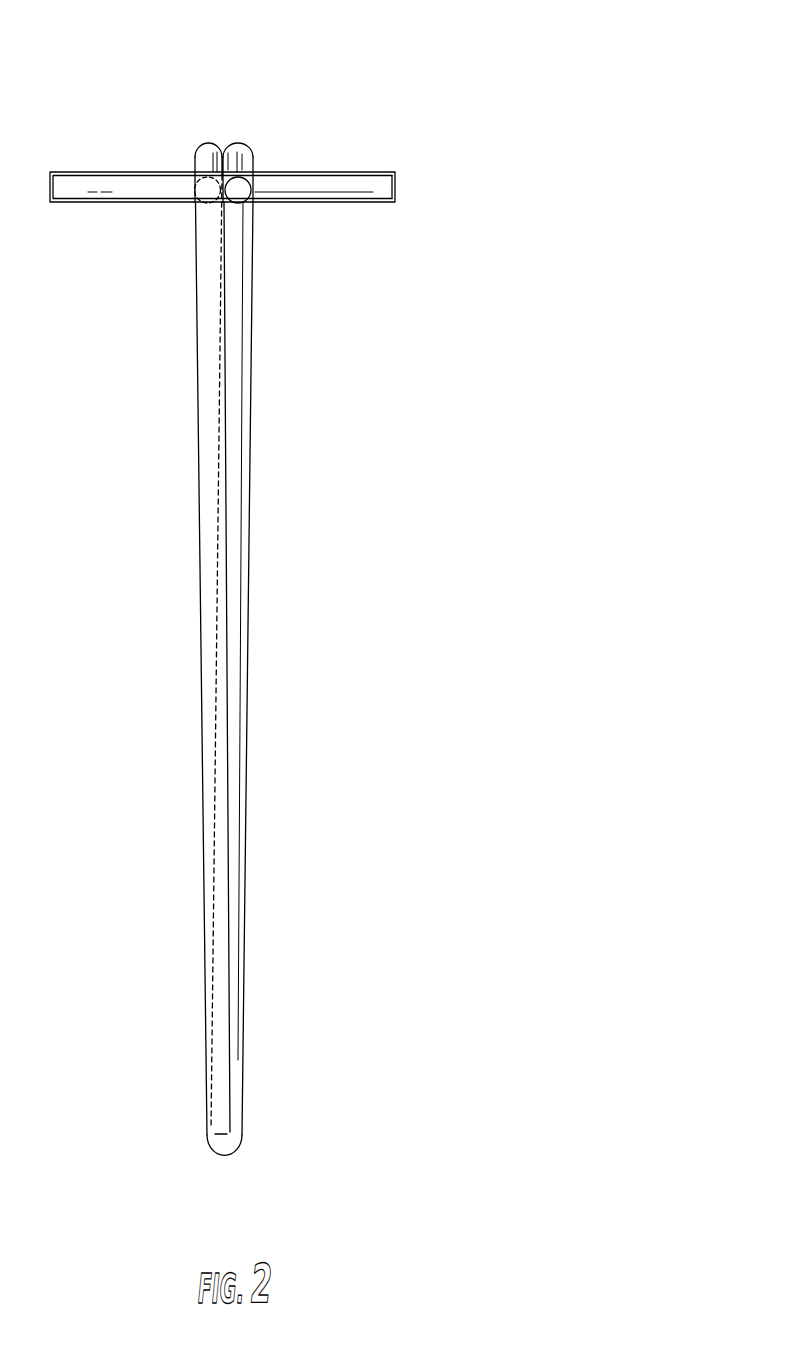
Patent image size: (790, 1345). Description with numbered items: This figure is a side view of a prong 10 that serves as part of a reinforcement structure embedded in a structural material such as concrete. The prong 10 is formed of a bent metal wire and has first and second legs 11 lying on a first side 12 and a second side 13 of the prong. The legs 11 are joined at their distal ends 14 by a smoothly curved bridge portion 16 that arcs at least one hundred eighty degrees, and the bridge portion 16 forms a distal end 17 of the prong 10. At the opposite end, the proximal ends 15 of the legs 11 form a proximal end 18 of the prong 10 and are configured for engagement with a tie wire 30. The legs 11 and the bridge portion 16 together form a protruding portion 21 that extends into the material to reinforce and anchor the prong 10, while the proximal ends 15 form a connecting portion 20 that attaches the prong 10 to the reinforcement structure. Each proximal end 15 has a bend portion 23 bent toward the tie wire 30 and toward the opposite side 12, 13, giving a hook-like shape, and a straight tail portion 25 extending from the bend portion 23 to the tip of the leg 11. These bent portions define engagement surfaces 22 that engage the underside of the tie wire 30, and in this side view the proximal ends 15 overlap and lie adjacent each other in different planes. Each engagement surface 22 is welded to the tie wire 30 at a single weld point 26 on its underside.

The prong 10 is at (247, 610).
The legs 11 is at (217, 655).
The first side 12 is at (163, 668).
The second side 13 is at (275, 668).
The distal ends 14 is at (284, 667).
The proximal ends 15 is at (251, 126).
The bridge portion 16 is at (266, 1172).
The distal end 17 is at (185, 1164).
The proximal end 18 is at (264, 158).
The connecting portion 20 is at (230, 132).
The protruding portion 21 is at (152, 651).
The engagement surface 22 is at (251, 94).
The bend portion 23 is at (217, 90).
The tail portion 25 is at (281, 215).
The weld point 26 is at (206, 141).
The tie wire 30 is at (367, 174).